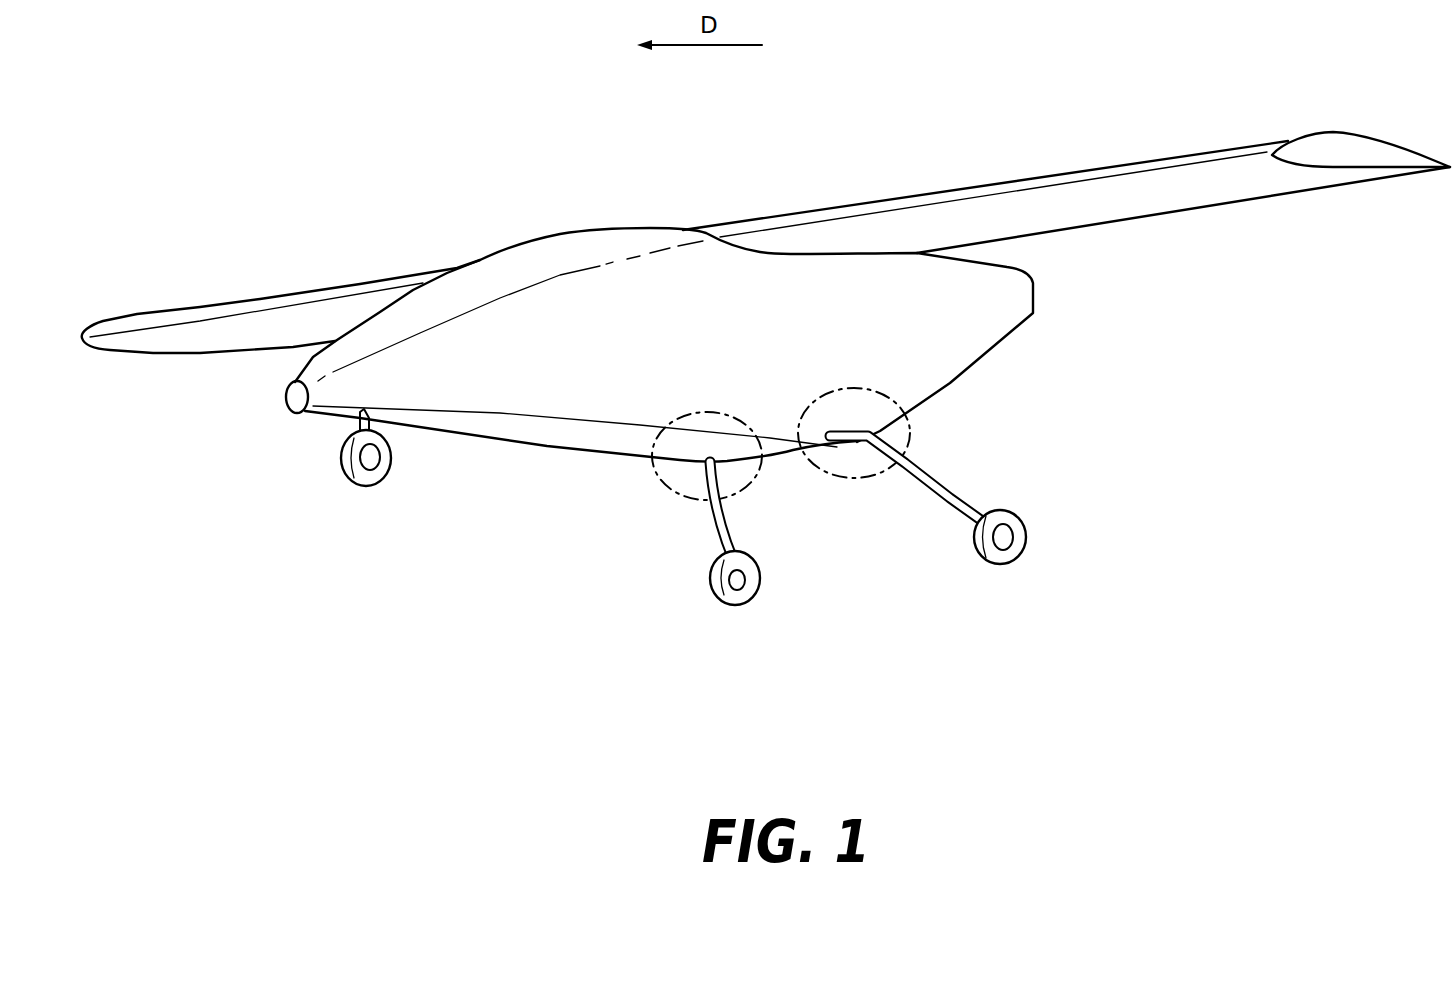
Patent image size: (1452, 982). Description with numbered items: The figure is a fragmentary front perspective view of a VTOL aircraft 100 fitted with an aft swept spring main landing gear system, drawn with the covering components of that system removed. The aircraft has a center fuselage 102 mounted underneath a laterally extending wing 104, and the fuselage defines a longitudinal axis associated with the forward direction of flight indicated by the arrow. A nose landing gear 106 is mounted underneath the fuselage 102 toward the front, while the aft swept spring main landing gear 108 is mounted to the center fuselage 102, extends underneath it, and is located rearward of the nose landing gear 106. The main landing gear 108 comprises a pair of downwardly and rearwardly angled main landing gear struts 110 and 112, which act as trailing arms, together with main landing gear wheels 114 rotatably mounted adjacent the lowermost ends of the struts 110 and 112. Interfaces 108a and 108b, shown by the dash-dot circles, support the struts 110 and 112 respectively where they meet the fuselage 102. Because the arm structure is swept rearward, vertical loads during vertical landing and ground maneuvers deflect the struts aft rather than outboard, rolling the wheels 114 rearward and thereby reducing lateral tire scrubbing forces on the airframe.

The VTOL aircraft 100 is at (310, 85).
The center fuselage 102 is at (549, 462).
The wing 104 is at (168, 294).
The nose landing gear 106 is at (325, 468).
The aft swept spring main landing gear 108 is at (870, 652).
The interface 108a is at (928, 437).
The interface 108b is at (639, 483).
The main landing gear strut 110 is at (971, 491).
The main landing gear strut 112 is at (699, 530).
The main landing gear wheel 114 is at (735, 622).